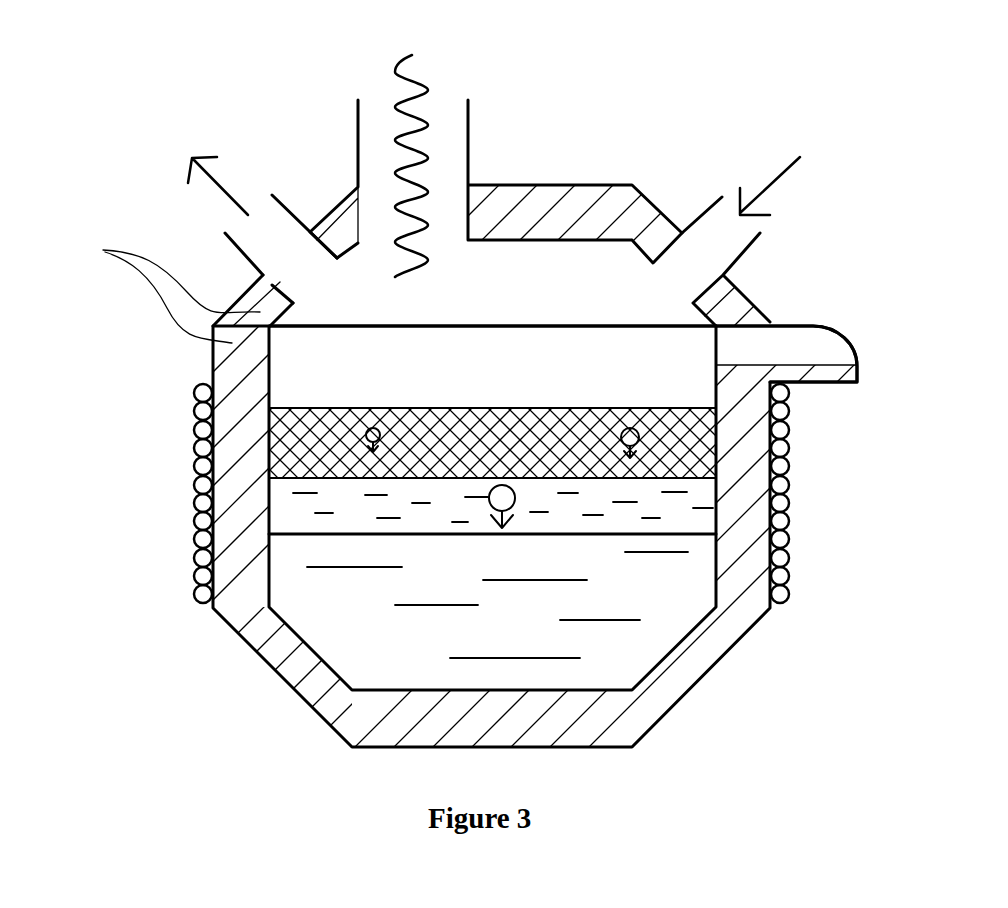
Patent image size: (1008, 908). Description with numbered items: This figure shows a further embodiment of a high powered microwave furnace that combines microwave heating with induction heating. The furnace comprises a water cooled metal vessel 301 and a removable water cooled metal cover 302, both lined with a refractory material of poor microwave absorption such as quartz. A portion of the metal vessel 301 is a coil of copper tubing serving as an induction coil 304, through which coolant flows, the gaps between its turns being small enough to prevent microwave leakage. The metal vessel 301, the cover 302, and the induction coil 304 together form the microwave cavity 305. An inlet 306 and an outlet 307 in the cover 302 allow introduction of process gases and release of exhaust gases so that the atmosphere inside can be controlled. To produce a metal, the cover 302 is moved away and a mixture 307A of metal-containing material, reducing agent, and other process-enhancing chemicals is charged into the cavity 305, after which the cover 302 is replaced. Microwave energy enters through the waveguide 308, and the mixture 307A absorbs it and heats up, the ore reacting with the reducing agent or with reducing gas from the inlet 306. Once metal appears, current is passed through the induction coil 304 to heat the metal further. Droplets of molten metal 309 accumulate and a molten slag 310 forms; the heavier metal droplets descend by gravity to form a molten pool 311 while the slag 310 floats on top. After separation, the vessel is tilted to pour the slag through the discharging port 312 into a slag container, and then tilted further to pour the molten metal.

The water cooled metal vessel 301 is at (213, 368).
The removable water cooled metal cover 302 is at (325, 208).
The induction coil 304 is at (195, 545).
The microwave cavity 305 is at (565, 372).
The inlet 306 is at (707, 249).
The outlet 307 is at (253, 237).
The mixture 307A is at (417, 433).
The waveguide 308 is at (447, 110).
The droplets of molten metal 309 is at (633, 428).
The molten slag 310 is at (655, 517).
The molten pool 311 is at (613, 650).
The discharging port 312 is at (783, 352).